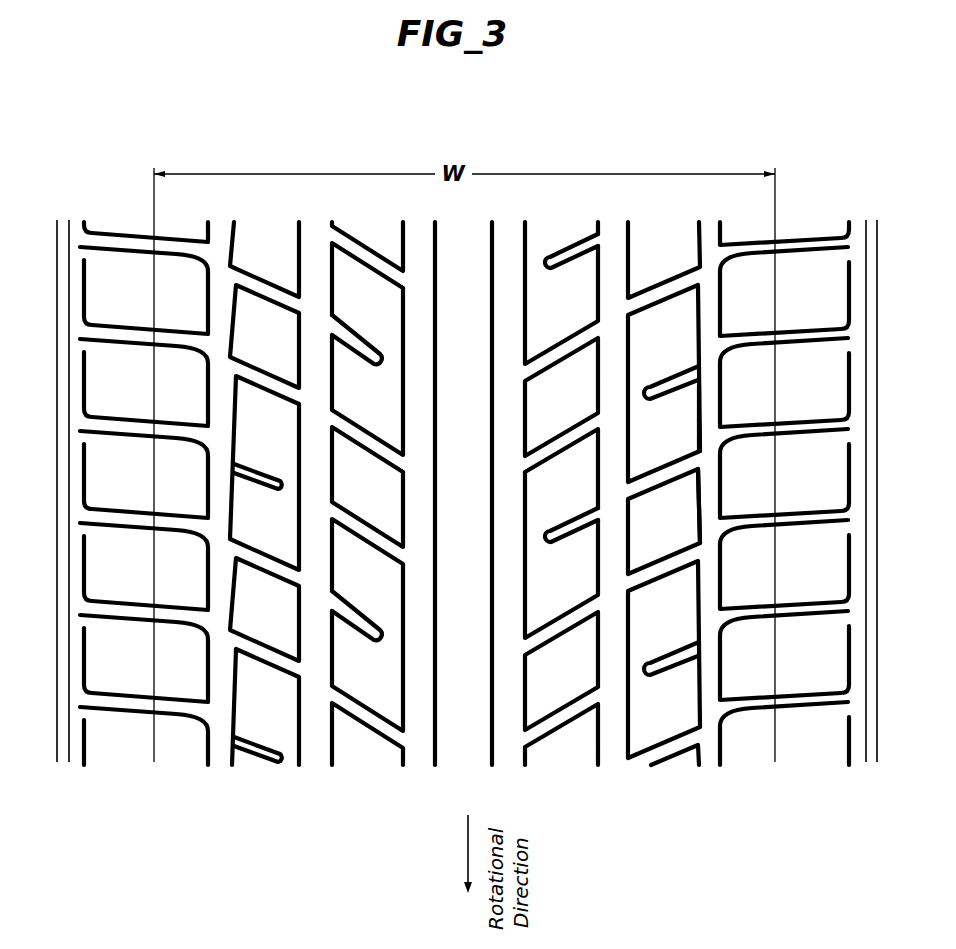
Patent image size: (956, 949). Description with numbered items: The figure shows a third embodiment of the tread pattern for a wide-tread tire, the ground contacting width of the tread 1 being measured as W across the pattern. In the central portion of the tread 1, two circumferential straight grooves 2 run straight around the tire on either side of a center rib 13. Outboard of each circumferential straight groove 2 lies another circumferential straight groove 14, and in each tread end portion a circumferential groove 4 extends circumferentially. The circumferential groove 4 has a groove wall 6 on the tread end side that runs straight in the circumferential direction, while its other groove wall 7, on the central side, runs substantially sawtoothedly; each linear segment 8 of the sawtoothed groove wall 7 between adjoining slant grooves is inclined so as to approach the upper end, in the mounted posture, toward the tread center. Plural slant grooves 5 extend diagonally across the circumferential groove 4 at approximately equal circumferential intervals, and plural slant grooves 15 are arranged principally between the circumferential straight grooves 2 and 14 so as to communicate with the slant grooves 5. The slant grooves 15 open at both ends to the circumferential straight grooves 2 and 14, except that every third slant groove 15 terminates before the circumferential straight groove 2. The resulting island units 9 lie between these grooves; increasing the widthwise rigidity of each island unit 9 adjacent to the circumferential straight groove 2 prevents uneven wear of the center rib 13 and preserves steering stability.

The tread 1 is at (58, 143).
The circumferential straight groove 2 is at (465, 472).
The circumferential groove 4 is at (464, 475).
The slant groove 5 is at (658, 284).
The groove wall 6 is at (723, 577).
The groove wall 7 is at (696, 407).
The linear segment 8 is at (698, 510).
The island unit 9 is at (257, 536).
The center rib 13 is at (478, 298).
The circumferential straight groove 14 is at (614, 232).
The slant groove 15 is at (352, 282).